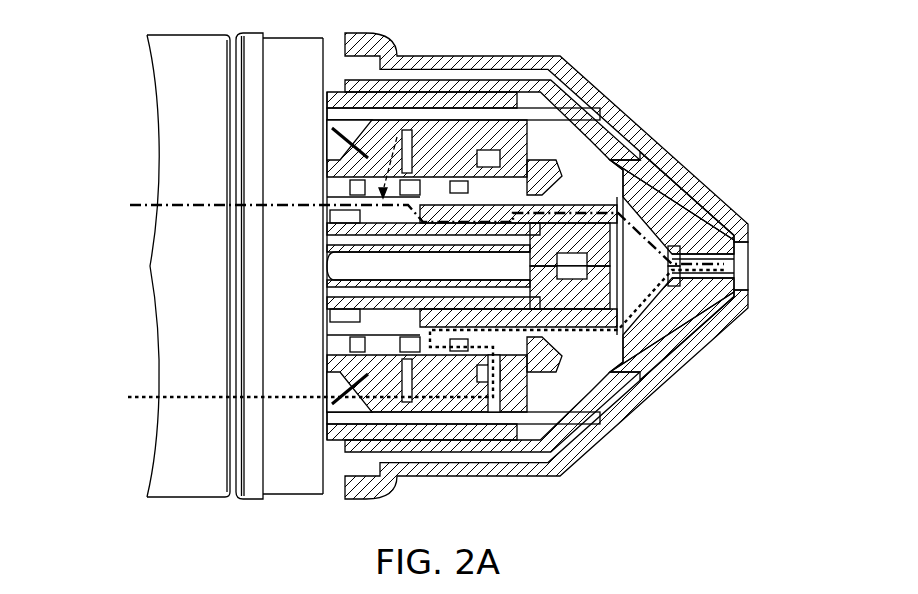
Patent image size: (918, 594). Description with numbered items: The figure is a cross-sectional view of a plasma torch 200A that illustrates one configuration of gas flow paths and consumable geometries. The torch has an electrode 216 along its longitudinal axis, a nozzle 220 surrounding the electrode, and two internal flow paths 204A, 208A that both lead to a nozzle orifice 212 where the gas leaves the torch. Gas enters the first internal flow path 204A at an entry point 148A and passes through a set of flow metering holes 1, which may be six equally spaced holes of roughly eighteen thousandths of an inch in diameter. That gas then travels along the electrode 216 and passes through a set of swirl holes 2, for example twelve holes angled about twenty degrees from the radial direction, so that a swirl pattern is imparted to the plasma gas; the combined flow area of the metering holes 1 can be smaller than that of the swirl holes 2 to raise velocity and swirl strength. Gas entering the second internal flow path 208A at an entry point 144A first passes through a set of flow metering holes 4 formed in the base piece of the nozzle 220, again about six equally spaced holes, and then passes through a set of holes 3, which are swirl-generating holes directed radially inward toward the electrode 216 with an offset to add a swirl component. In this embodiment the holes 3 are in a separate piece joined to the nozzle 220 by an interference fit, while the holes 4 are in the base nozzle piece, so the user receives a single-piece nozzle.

The set of flow metering holes 1 is at (452, 62).
The set of swirl holes 2 is at (600, 93).
The set of holes 3 is at (330, 424).
The set of flow metering holes in the nozzle 4 is at (615, 445).
The plasma torch 200A is at (417, 252).
The internal flow path 204A is at (182, 200).
The internal flow path 208A is at (182, 395).
The entry point 148A is at (130, 205).
The entry point 144A is at (128, 397).
The nozzle orifice 212 is at (742, 268).
The electrode 216 is at (539, 196).
The nozzle 220 is at (655, 345).